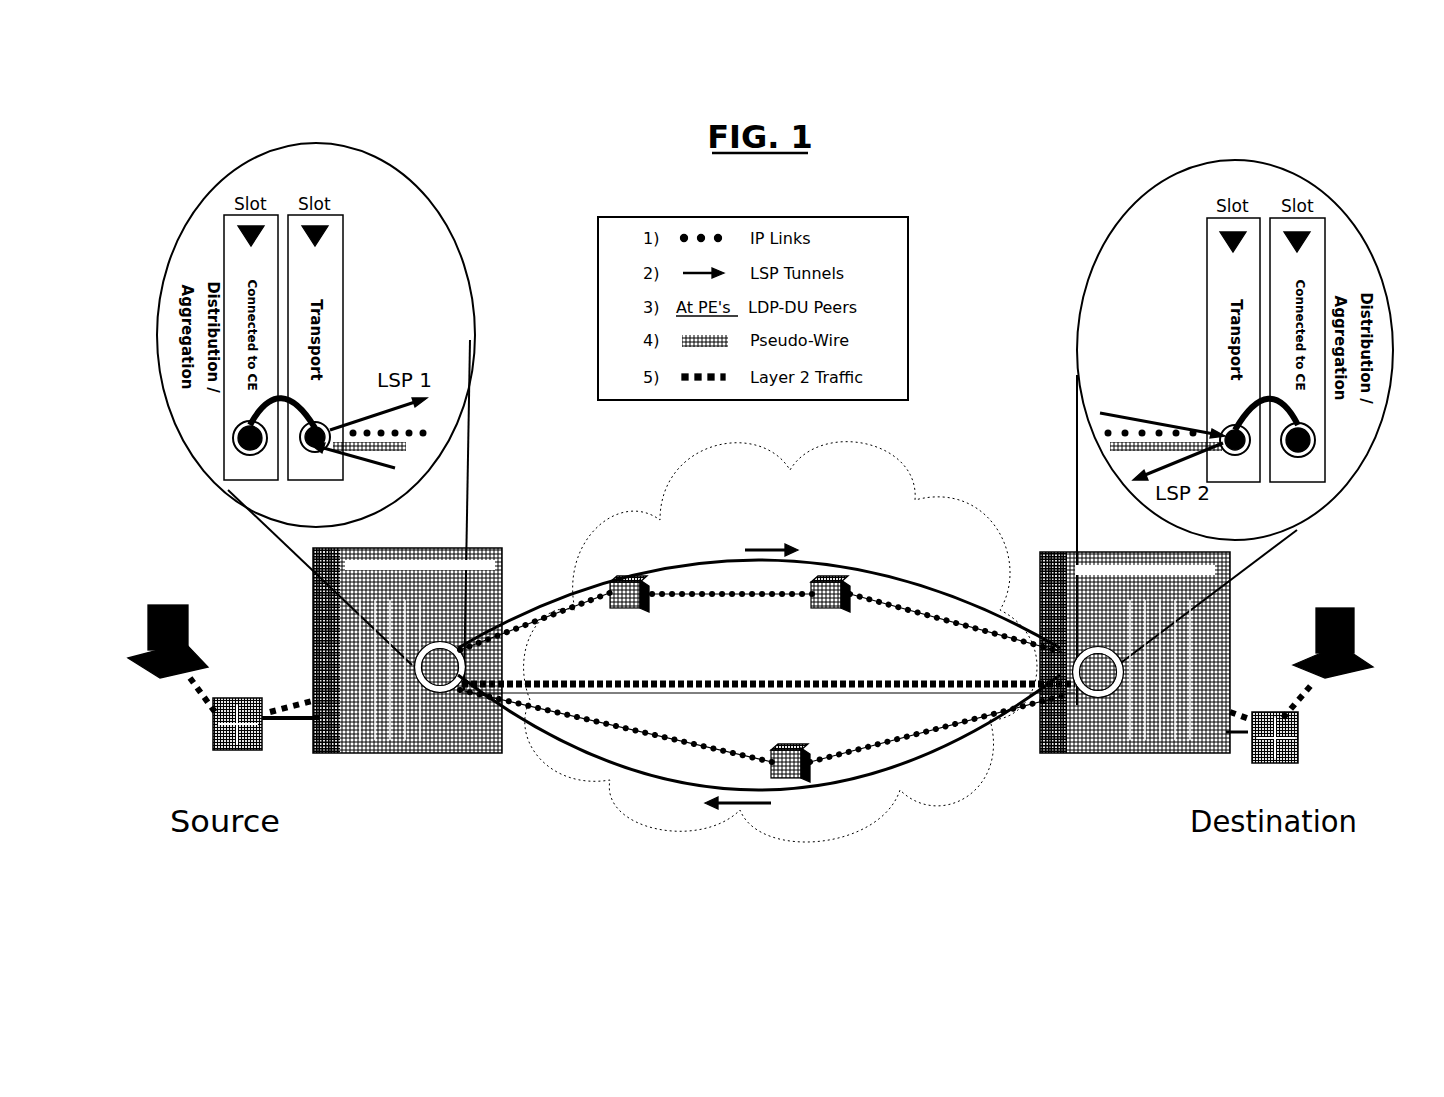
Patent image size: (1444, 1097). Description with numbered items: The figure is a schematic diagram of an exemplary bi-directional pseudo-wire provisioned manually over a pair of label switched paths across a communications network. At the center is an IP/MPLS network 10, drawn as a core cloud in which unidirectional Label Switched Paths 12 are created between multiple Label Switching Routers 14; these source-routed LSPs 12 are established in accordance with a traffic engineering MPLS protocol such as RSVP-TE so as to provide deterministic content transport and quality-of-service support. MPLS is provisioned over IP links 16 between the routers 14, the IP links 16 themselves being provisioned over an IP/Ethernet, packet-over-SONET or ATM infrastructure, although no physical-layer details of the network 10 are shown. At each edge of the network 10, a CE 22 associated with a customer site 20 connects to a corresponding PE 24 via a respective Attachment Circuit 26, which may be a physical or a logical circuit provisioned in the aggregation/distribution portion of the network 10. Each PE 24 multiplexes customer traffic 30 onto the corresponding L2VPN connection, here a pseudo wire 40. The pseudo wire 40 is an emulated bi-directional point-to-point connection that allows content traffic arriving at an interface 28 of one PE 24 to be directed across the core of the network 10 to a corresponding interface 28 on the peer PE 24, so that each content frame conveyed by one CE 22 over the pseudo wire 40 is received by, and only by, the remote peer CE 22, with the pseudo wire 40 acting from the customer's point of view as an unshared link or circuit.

The IP/MPLS network 10 is at (866, 488).
The Label Switched Path 12 is at (906, 581).
The Label Switching Router 14 is at (496, 548).
The IP link 16 is at (584, 603).
The customer site 20 is at (163, 636).
The CE 22 is at (215, 735).
The PE 24 is at (363, 740).
The Attachment Circuit 26 is at (287, 723).
The interface 28 is at (233, 467).
The customer traffic 30 is at (250, 414).
The pseudo wire 40 is at (743, 683).